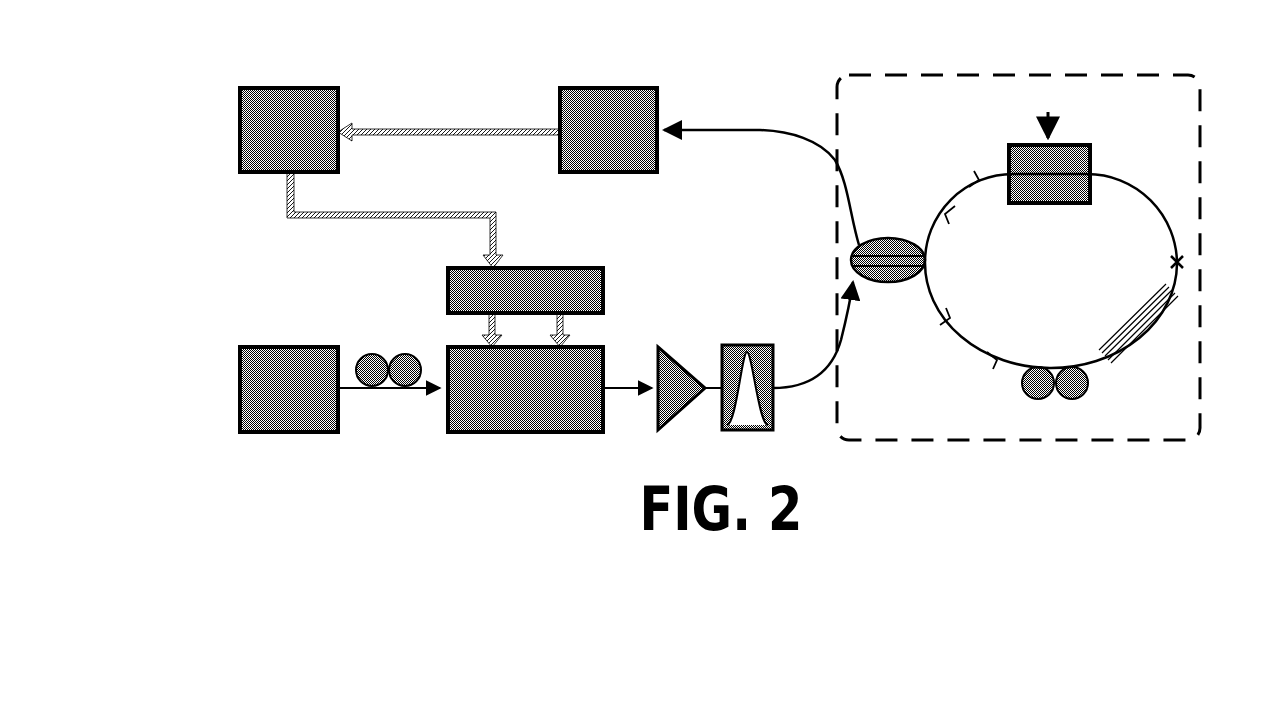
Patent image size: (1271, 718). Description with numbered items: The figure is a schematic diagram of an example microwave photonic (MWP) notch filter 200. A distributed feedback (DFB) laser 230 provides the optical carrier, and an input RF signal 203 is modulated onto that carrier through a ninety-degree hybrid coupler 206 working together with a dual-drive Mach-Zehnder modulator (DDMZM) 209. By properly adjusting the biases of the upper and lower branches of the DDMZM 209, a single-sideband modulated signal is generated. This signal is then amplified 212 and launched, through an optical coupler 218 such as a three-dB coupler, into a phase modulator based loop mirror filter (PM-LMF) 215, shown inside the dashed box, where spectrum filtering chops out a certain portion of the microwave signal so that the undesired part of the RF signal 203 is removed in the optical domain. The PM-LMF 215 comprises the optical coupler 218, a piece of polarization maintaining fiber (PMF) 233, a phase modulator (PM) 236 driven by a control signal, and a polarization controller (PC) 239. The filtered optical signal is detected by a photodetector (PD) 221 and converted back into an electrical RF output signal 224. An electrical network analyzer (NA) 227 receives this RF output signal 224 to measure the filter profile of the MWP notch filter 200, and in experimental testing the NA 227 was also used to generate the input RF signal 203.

The MWP notch filter 200 is at (790, 44).
The input RF signal 203 is at (488, 211).
The 90-degree hybrid coupler 206 is at (535, 265).
The dual-drive Mach-Zehnder modulator 209 is at (525, 432).
The amplifier 212 is at (660, 347).
The phase modulator based loop mirror filter 215 is at (1054, 270).
The optical coupler 218 is at (880, 240).
The photodetector 221 is at (640, 173).
The RF output signal 224 is at (456, 136).
The electrical network analyzer 227 is at (283, 173).
The distributed feedback laser 230 is at (295, 432).
The polarization maintaining fiber 233 is at (1152, 318).
The phase modulator 236 is at (1043, 203).
The polarization controller 239 is at (1025, 396).